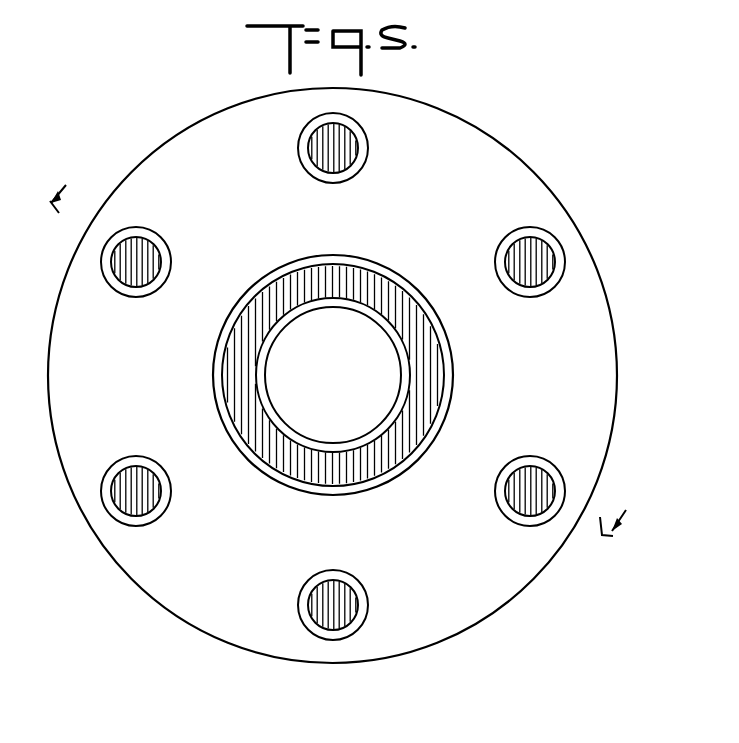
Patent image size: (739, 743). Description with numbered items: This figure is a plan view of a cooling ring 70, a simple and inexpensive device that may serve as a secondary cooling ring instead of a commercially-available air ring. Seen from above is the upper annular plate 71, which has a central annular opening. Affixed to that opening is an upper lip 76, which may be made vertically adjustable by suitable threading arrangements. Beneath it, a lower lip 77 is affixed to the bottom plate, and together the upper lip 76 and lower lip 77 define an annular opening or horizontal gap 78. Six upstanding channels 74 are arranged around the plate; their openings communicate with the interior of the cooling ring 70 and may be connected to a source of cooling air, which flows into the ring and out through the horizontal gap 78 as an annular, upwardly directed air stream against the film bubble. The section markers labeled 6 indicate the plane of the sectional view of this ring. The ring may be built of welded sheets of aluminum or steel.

The cooling ring 70 is at (578, 186).
The upper annular plate 71 is at (128, 360).
The upstanding channels 74 is at (362, 168).
The upper lip 76 is at (453, 383).
The lower lip 77 is at (385, 425).
The horizontal gap 78 is at (397, 300).
The section line 6- 6 is at (344, 349).